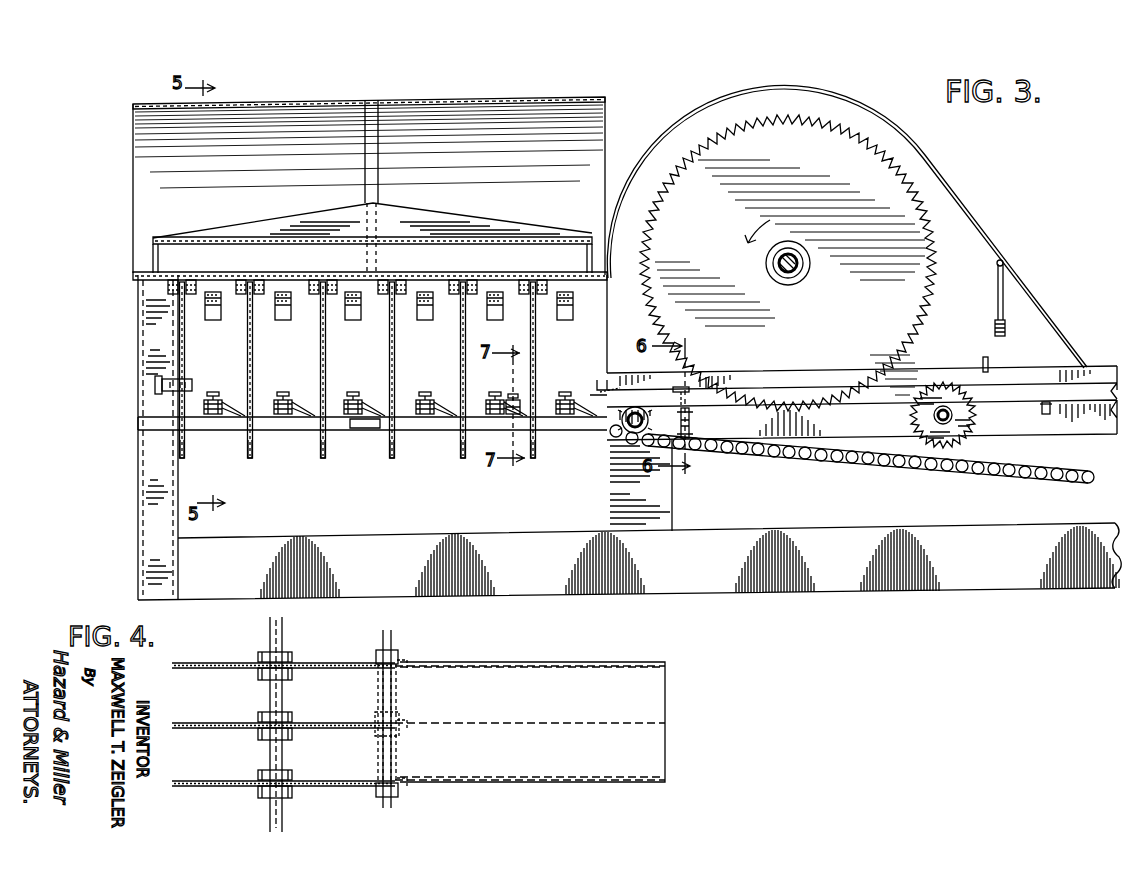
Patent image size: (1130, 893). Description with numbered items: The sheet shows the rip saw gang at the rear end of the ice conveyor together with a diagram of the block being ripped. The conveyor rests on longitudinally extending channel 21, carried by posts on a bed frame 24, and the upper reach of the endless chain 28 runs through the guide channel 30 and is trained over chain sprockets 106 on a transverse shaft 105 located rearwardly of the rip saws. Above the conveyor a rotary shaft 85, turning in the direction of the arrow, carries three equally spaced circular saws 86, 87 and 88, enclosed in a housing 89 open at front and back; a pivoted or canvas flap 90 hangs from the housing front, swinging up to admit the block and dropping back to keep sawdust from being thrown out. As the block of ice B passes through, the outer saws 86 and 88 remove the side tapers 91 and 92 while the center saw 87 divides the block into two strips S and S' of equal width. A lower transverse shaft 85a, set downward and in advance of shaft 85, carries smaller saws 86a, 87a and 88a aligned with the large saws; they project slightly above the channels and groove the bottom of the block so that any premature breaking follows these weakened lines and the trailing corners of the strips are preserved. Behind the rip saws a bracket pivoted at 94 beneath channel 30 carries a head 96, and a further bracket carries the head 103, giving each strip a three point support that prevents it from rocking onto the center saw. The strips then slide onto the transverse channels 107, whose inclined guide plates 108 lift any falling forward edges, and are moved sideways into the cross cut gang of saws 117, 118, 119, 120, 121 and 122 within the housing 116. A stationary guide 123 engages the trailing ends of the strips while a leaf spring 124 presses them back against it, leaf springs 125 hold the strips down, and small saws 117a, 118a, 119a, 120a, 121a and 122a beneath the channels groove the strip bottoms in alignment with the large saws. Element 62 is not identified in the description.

In FIG. 3, the housing 116 is at (470, 112).
In FIG. 3, the leaf springs 125 is at (406, 278).
In FIG. 3, the cross cut saw 122 is at (186, 350).
In FIG. 3, the cross cut saw 121 is at (254, 353).
In FIG. 3, the cross cut saw 120 is at (327, 352).
In FIG. 3, the cross cut saw 119 is at (395, 353).
In FIG. 3, the cross cut saw 118 is at (466, 346).
In FIG. 3, the cross cut saw 117 is at (536, 348).
In FIG. 3, the small saw 122a is at (185, 446).
In FIG. 3, the small saw 121a is at (254, 458).
In FIG. 3, the small saw 120a is at (326, 458).
In FIG. 3, the small saw 119a is at (396, 456).
In FIG. 3, the small saw 118a is at (465, 458).
In FIG. 3, the small saw 117a is at (535, 458).
In FIG. 3, the transverse channels 107 is at (279, 432).
In FIG. 3, the inclined guide plates 108 is at (368, 431).
In FIG. 3, the head 103 is at (519, 396).
In FIG. 3, the leaf spring 124 is at (194, 388).
In FIG. 3, the stationary guide 123 is at (598, 386).
In FIG. 3, the bed frame 24 is at (1015, 570).
In FIG. 3, the circular saw 86 is at (910, 226).
In FIG. 4, the circular saw 86 is at (339, 663).
In FIG. 3, the rotary shaft 85 is at (805, 259).
In FIG. 4, the rotary shaft 85 is at (268, 826).
In FIG. 3, the housing 89 is at (933, 162).
In FIG. 3, the flap 90 is at (1010, 293).
In FIG. 3, the channel 21 is at (1050, 376).
In FIG. 3, the guide channel 30 is at (1075, 392).
In FIG. 3, the pin 62 is at (990, 380).
In FIG. 3, the transverse shaft 85a is at (955, 417).
In FIG. 4, the transverse shaft 85a is at (383, 806).
In FIG. 3, the center saw 87a is at (920, 416).
In FIG. 4, the center saw 87a is at (400, 722).
In FIG. 3, the endless chain 28 is at (950, 470).
In FIG. 3, the transverse shaft 105 is at (622, 431).
In FIG. 3, the chain sprockets 106 is at (612, 437).
In FIG. 3, the pivot 94 is at (692, 420).
In FIG. 3, the head 96 is at (684, 390).
In FIG. 4, the center circular saw 87 is at (338, 723).
In FIG. 4, the circular saw 88 is at (338, 781).
In FIG. 4, the small saw 86a is at (398, 663).
In FIG. 4, the small saw 88a is at (399, 781).
In FIG. 4, the block of ice B is at (665, 698).
In FIG. 4, the side taper 91 is at (450, 663).
In FIG. 4, the side taper 92 is at (437, 786).
In FIG. 4, the strip S is at (553, 655).
In FIG. 4, the strip S' is at (548, 792).